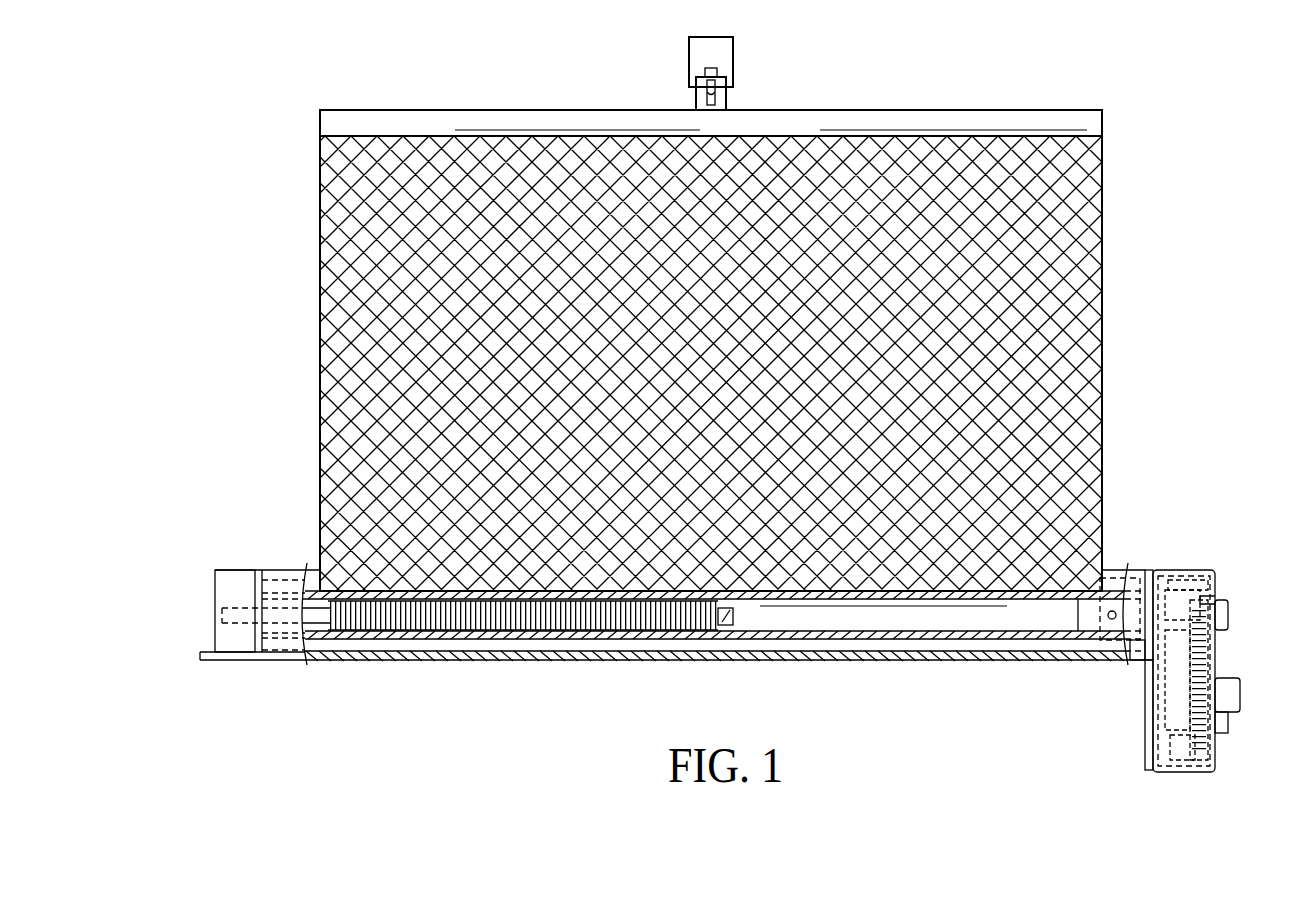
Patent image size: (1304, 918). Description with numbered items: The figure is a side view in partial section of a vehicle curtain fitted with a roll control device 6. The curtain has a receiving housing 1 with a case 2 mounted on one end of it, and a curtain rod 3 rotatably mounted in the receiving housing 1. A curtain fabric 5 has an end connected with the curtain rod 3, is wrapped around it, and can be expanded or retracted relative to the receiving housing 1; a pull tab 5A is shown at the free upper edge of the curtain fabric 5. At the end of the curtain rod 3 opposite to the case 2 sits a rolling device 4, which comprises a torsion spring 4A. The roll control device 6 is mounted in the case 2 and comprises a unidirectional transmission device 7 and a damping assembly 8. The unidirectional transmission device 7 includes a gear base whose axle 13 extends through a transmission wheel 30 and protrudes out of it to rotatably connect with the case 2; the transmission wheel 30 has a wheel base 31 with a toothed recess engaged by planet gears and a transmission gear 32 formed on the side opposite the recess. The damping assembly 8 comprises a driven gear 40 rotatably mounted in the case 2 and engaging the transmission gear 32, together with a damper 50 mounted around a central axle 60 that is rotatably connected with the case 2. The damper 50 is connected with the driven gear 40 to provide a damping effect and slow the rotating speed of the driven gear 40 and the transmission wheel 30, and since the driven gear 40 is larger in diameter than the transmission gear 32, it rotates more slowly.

The receiving housing 1 is at (1132, 560).
The case 2 is at (1170, 558).
The curtain rod 3 is at (989, 641).
The rolling device 4 is at (386, 634).
The torsion spring 4A is at (512, 626).
The curtain fabric 5 is at (1082, 346).
The handle 5A is at (728, 58).
The roll control device 6 is at (1158, 742).
The unidirectional transmission device 7 is at (1197, 586).
The damping assembly 8 is at (1178, 742).
The axle 13 is at (1230, 613).
The transmission wheel 30 is at (1182, 576).
The wheel base 31 is at (1140, 657).
The transmission gear 32 is at (1197, 597).
The driven gear 40 is at (1210, 752).
The damper 50 is at (1165, 715).
The central axle 60 is at (1238, 690).